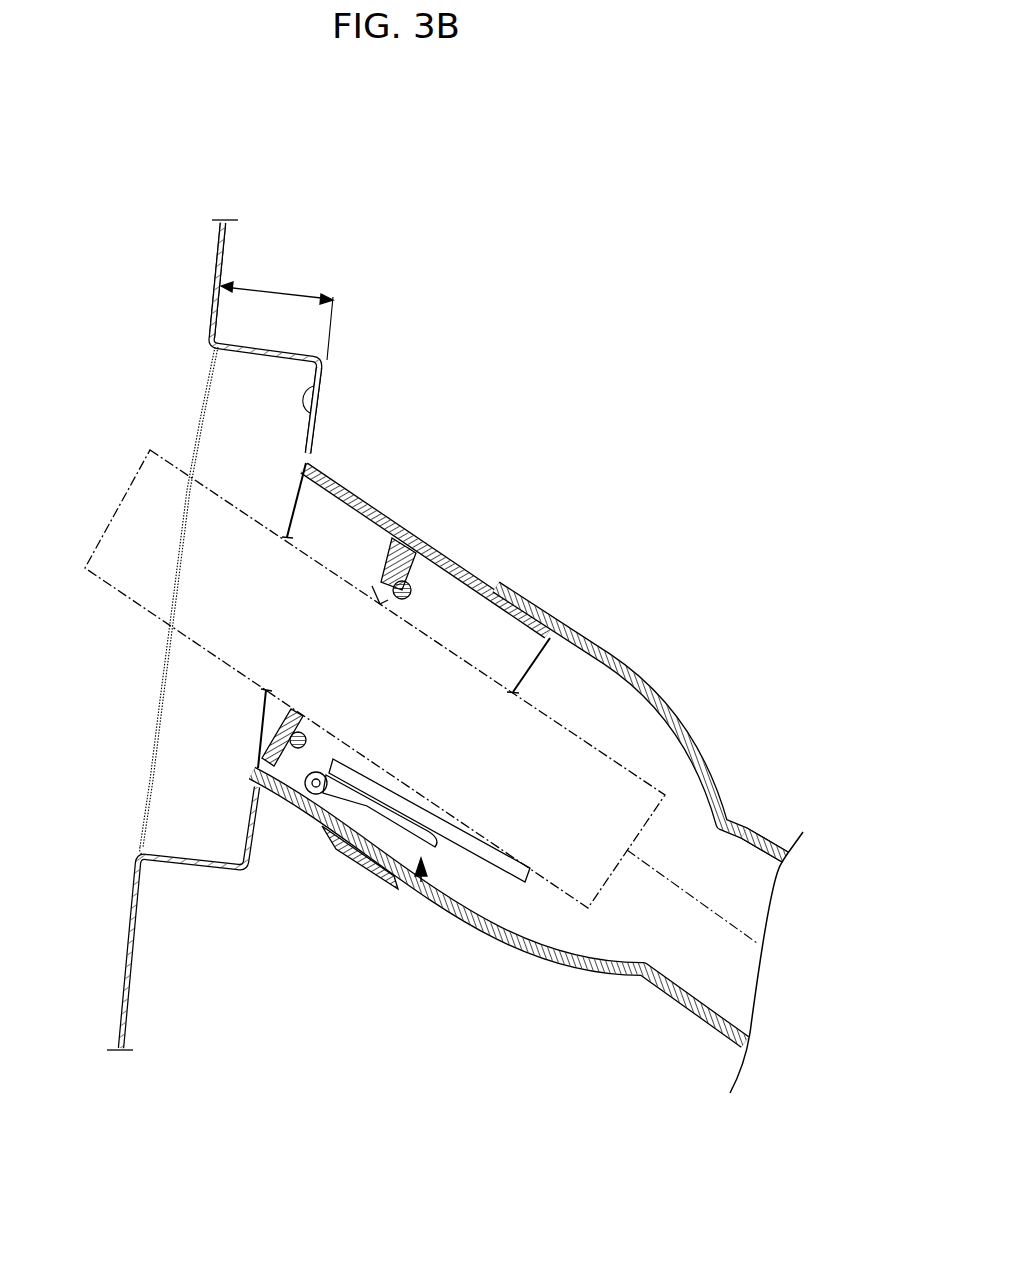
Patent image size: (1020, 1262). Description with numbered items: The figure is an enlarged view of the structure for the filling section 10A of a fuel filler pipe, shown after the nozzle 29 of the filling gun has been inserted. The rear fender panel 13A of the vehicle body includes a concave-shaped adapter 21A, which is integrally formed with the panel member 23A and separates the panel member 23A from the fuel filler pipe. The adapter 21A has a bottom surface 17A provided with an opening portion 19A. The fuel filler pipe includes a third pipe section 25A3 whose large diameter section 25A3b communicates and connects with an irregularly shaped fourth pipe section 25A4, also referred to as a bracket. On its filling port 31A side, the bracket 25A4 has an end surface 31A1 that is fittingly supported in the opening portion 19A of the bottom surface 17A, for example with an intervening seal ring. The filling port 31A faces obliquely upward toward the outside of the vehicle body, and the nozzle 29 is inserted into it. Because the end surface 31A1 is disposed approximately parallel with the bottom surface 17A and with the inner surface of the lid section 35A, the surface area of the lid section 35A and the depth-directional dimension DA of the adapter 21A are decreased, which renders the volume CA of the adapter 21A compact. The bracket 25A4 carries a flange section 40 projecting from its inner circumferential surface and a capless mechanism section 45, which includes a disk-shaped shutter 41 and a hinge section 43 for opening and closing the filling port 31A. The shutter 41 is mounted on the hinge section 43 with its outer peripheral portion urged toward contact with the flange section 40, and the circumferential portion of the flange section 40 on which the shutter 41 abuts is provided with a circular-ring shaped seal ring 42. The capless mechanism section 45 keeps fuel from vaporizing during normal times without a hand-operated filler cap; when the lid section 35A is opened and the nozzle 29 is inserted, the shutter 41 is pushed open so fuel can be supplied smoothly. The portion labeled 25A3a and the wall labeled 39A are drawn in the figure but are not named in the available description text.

The structure for the filling section 10A is at (560, 272).
The rear fender panel 13A is at (226, 254).
The panel member 23A is at (213, 277).
The bottom surface 17A is at (323, 383).
The opening portion 19A is at (308, 462).
The adapter 21A is at (340, 350).
The depth-directional dimension DA is at (277, 284).
The volume CA is at (267, 436).
The lid section 35A is at (193, 418).
The nozzle 29 is at (123, 608).
The fourth pipe section 25A4 is at (481, 578).
The third pipe section 25A3 is at (660, 813).
The large diameter section 25A3b is at (572, 612).
The duct wall end portion 25A3a is at (746, 835).
The flange section 40 is at (380, 567).
The seal ring 42 is at (404, 580).
The duct lower wall 39A is at (560, 950).
The filling port 31A is at (268, 693).
The end surface 31A1 is at (290, 716).
The shutter 41 is at (483, 881).
The hinge section 43 is at (365, 836).
The capless mechanism section 45 is at (419, 890).